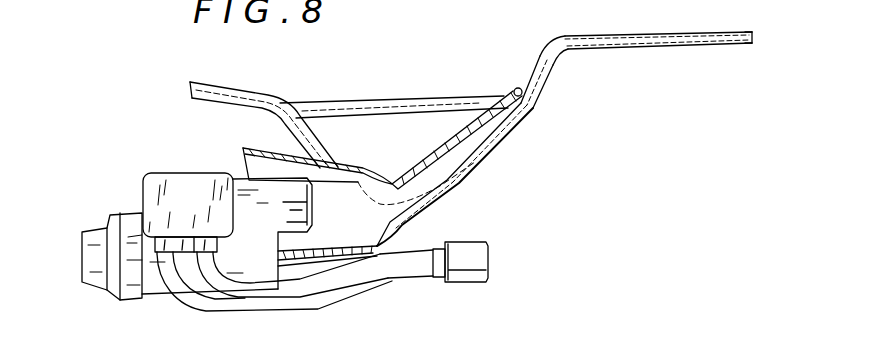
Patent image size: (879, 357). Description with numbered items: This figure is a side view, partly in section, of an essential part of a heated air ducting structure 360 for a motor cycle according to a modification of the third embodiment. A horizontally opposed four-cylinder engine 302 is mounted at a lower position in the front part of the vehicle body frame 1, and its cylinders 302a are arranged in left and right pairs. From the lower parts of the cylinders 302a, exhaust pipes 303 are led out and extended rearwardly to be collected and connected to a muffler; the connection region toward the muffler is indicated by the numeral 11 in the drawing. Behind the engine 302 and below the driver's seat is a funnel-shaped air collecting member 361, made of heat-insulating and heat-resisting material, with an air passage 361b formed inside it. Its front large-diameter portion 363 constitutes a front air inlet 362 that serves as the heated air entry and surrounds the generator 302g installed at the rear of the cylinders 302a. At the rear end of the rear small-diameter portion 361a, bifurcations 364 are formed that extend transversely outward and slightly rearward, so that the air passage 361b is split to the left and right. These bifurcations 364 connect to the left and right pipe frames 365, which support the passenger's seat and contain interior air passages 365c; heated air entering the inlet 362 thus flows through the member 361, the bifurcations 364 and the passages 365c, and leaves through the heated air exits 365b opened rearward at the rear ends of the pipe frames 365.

The vehicle body frame 1 is at (266, 93).
The exhaust pipe / muffler connection 11 is at (472, 278).
The horizontally opposed four-cylinder engine 302 is at (197, 239).
The cylinders 302a is at (173, 183).
The generator 302g is at (283, 207).
The exhaust pipes 303 is at (188, 300).
The heated air ducting structure 360 is at (392, 220).
The air collecting member 361 is at (380, 220).
The rear small-diameter portion 361a is at (487, 138).
The air passage 361b is at (343, 225).
The front air inlet 362 is at (247, 157).
The front large-diameter portion 363 is at (268, 152).
The bifurcations 364 is at (488, 97).
The pipe frames 365 is at (655, 83).
The heated air exits 365b is at (758, 44).
The interior air passages 365c is at (587, 50).